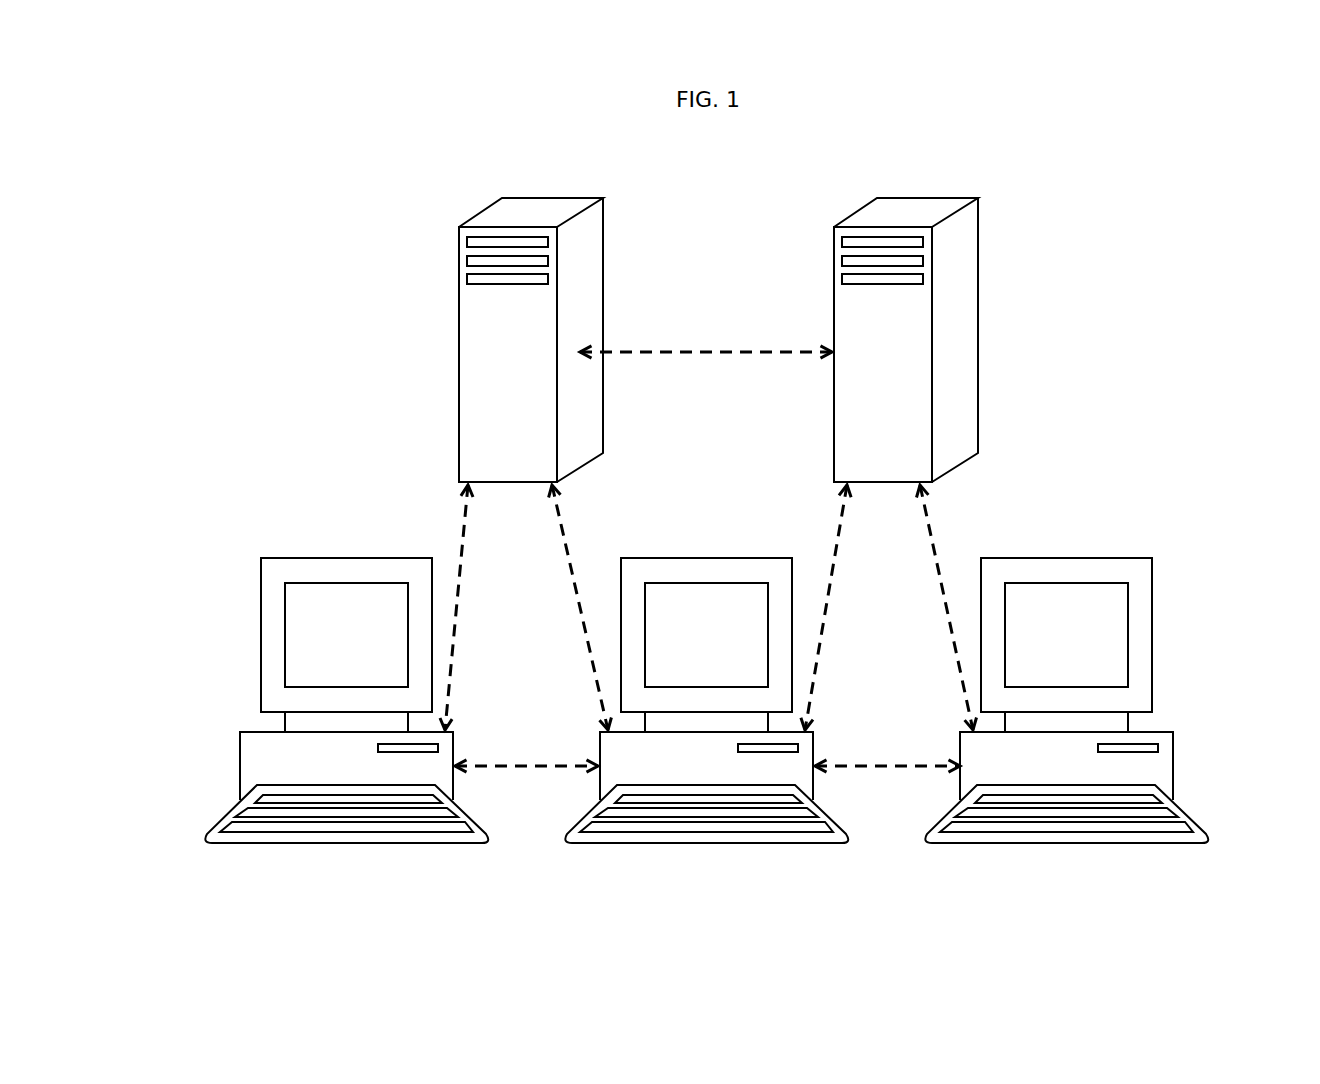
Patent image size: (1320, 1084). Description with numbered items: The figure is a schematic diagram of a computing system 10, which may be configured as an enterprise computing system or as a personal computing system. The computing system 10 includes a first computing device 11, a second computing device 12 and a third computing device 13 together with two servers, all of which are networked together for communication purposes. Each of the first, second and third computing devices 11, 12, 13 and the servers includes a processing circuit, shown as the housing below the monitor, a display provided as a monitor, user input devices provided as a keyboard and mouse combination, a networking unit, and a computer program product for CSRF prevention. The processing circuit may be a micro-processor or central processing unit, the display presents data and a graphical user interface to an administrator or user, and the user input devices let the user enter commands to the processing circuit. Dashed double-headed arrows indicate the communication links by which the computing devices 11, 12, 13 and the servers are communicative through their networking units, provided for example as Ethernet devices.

The computing system 10 is at (350, 377).
The first computing device 11 is at (336, 703).
The second computing device 12 is at (703, 703).
The third computing device 13 is at (1094, 704).